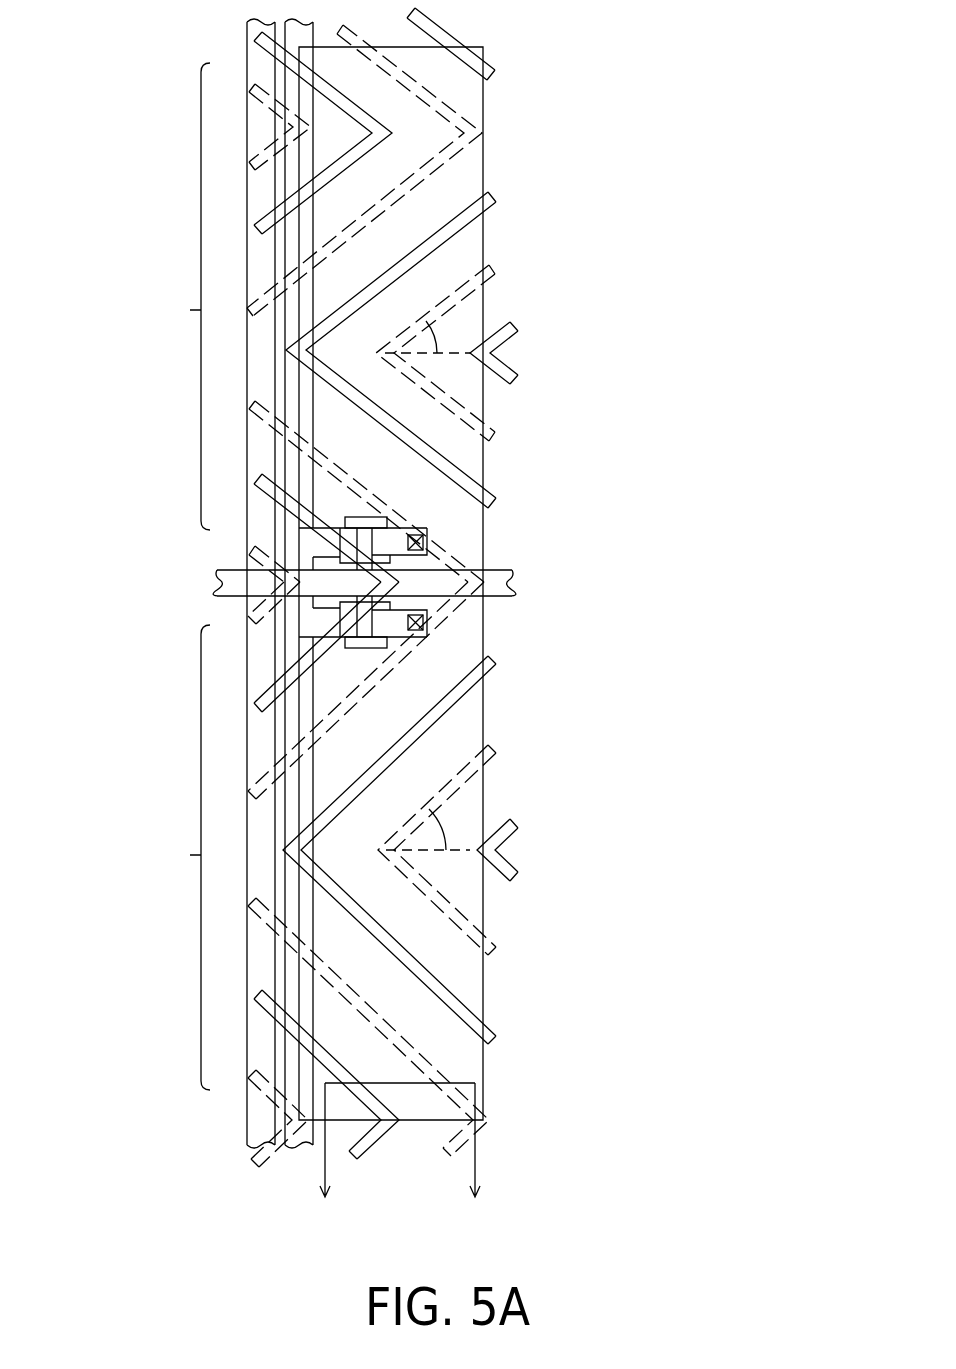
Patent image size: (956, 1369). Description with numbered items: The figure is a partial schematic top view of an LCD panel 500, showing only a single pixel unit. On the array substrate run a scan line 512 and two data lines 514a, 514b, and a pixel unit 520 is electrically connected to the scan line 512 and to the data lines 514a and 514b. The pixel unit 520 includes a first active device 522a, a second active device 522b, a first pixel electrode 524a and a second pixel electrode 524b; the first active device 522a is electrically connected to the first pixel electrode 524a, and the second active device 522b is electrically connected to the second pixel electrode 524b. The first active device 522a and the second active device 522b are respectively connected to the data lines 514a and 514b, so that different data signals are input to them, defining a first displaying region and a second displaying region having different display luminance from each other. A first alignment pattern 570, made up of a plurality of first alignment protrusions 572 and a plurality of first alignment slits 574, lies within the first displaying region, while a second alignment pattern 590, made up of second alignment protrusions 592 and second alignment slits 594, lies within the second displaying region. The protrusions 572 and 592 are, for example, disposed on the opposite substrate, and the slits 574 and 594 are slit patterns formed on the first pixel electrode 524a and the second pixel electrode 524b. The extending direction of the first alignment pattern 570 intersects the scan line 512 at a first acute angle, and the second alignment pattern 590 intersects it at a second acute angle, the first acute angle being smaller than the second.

The LCD panel 500 is at (803, 1215).
The scan line 512 is at (217, 578).
The data line 514a is at (255, 1111).
The data line 514b is at (300, 1138).
The pixel unit 520 is at (522, 583).
The first active device 522a is at (373, 505).
The second active device 522b is at (373, 663).
The first pixel electrode 524a is at (483, 470).
The second pixel electrode 524b is at (483, 705).
The first alignment pattern 570 is at (472, 295).
The first alignment protrusions 572 is at (468, 208).
The first alignment slits 574 is at (432, 178).
The second alignment pattern 590 is at (475, 874).
The second alignment protrusions 592 is at (470, 1008).
The second alignment slits 594 is at (490, 947).